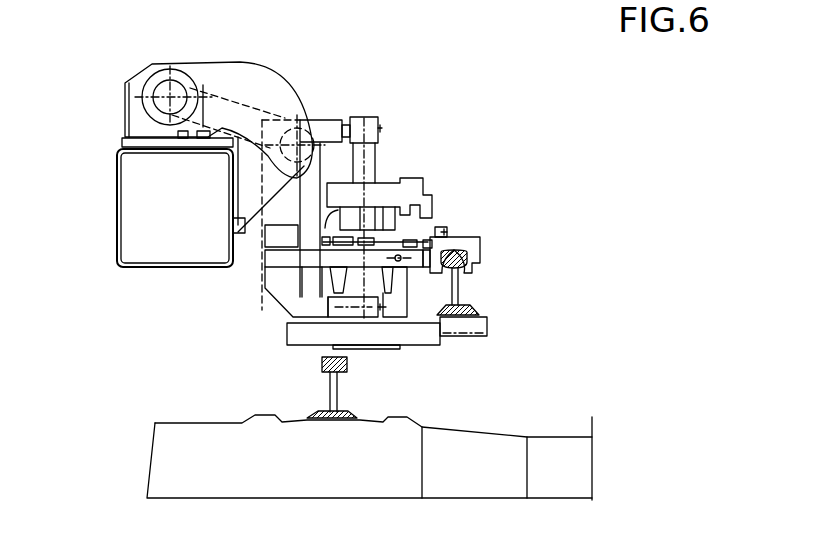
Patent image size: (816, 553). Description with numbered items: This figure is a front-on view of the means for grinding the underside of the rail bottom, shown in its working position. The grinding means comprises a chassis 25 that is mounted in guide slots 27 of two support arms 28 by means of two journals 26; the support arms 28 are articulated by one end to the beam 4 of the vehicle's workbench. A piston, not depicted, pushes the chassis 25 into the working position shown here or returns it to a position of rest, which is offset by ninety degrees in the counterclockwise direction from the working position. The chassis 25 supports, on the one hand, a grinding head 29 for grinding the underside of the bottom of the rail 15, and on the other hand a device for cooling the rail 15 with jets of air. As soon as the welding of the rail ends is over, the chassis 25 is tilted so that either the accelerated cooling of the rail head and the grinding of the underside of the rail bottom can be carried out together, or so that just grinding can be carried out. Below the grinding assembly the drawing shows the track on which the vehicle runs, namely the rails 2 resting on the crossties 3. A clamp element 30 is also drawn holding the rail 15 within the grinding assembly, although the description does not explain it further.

The support arms 28 is at (243, 82).
The guide slots 27 is at (248, 123).
The journals 26 is at (300, 137).
The grinding head 29 is at (367, 220).
The rail clamp 30 is at (472, 243).
The rail 15 is at (457, 290).
The rails 2 is at (335, 388).
The crossties 3 is at (182, 457).
The beam 4 is at (138, 214).
The chassis 25 is at (282, 282).